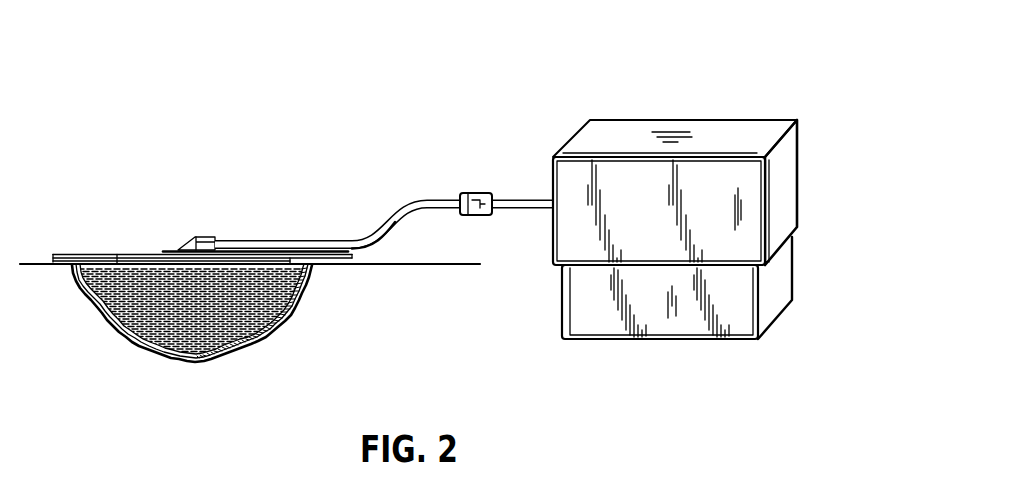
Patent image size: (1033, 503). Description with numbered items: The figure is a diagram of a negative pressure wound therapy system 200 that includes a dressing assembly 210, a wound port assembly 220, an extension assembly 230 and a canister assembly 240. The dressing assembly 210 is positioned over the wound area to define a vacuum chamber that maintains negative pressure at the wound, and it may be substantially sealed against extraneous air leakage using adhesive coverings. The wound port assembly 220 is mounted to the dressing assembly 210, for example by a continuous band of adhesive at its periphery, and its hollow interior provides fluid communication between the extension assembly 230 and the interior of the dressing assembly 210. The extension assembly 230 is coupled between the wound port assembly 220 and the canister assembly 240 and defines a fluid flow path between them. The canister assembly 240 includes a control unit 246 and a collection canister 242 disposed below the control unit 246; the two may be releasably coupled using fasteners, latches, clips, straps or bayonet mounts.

The negative pressure wound therapy system 200 is at (360, 87).
The dressing assembly 210 is at (248, 350).
The wound port assembly 220 is at (198, 233).
The extension assembly 230 is at (402, 197).
The canister assembly 240 is at (732, 83).
The collection canister 242 is at (558, 318).
The control unit 246 is at (570, 132).